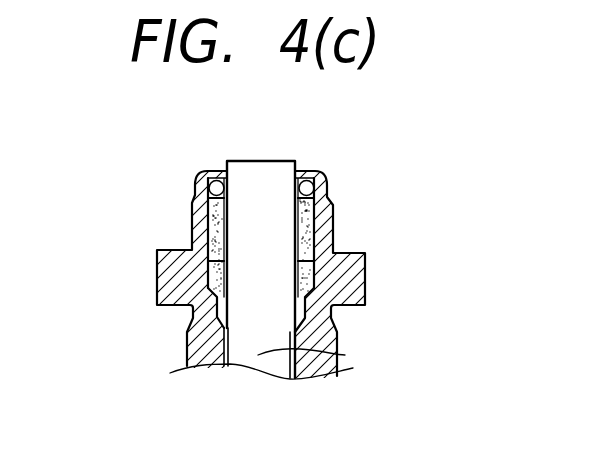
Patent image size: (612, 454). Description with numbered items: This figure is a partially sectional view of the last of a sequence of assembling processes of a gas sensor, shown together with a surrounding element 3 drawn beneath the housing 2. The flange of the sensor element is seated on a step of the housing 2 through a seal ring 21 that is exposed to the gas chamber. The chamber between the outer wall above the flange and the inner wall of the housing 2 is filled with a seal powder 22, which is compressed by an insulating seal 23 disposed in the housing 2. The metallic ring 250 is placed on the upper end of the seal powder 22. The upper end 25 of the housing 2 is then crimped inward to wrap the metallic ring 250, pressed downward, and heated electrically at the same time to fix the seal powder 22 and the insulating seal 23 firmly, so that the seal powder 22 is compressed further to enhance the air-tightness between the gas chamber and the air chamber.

The housing 2 is at (350, 291).
The tank wall 3 is at (345, 355).
The seal ring 21 is at (226, 362).
The seal powder 22 is at (207, 272).
The insulating seal 23 is at (310, 230).
The upper end 25 is at (310, 178).
The metallic ring 250 is at (329, 188).